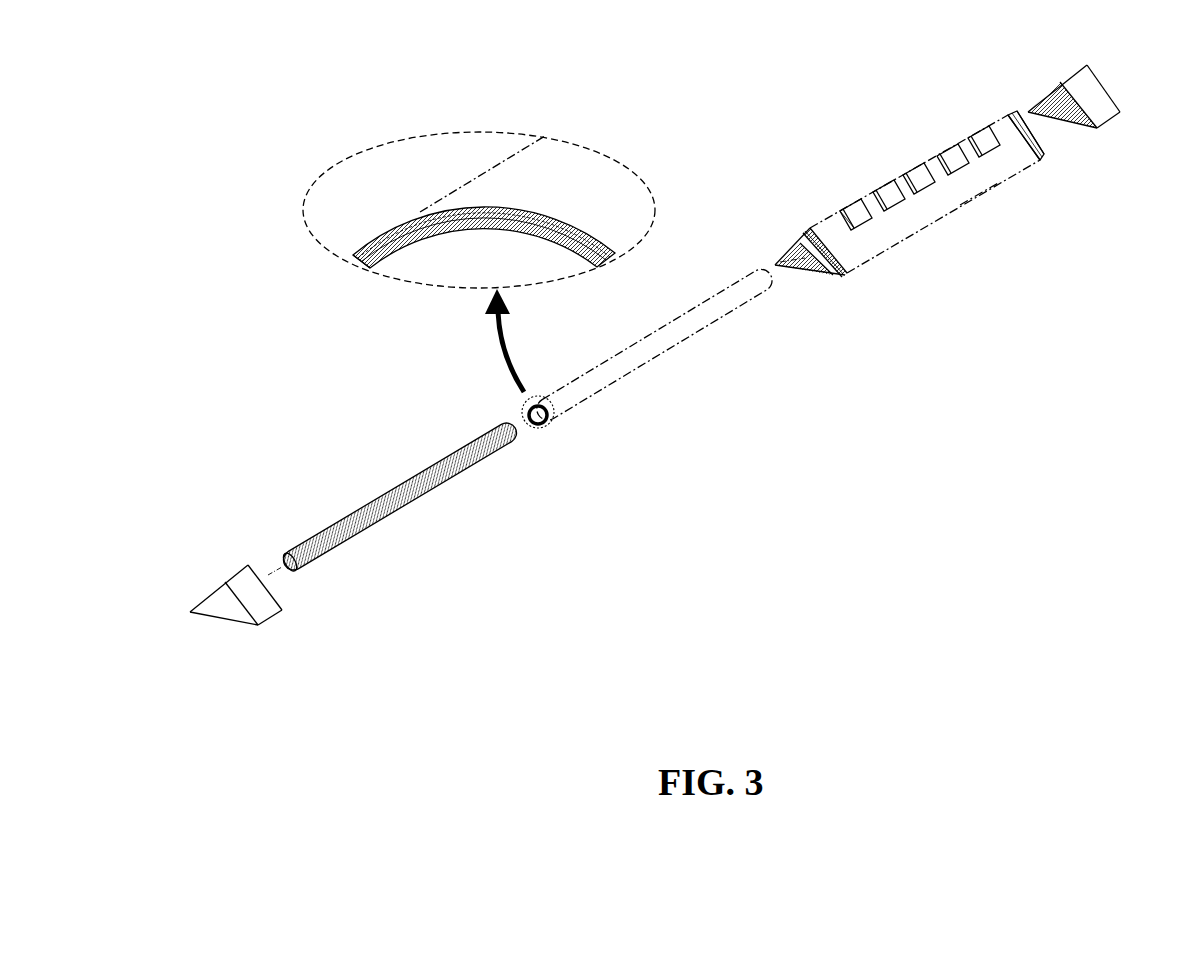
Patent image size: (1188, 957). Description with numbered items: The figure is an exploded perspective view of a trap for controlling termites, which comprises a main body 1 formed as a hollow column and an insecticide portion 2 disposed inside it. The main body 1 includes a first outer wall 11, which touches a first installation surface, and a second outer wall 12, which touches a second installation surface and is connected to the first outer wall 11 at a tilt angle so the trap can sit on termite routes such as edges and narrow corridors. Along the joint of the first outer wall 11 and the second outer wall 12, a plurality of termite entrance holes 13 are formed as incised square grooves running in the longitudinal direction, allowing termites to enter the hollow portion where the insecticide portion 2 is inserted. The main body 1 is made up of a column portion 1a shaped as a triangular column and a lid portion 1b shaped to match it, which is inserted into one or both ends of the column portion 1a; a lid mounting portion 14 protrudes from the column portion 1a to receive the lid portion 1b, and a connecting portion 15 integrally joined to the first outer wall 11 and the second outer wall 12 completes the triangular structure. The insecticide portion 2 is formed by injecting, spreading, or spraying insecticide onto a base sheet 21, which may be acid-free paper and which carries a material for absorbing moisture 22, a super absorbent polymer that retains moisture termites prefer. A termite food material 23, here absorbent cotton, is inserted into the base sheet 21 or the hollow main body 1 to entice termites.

The main body 1 is at (1065, 250).
The column portion 1a is at (1037, 168).
The lid portion 1b is at (1112, 127).
The first outer wall 11 is at (830, 205).
The second outer wall 12 is at (822, 233).
The termite entrance hole 13 is at (943, 153).
The lid mounting portion 14 is at (842, 276).
The connecting portion 15 is at (985, 197).
The insecticide portion 2 is at (507, 535).
The base sheet 21 is at (558, 418).
The material for absorbing moisture 22 is at (385, 266).
The termite food material 23 is at (495, 450).